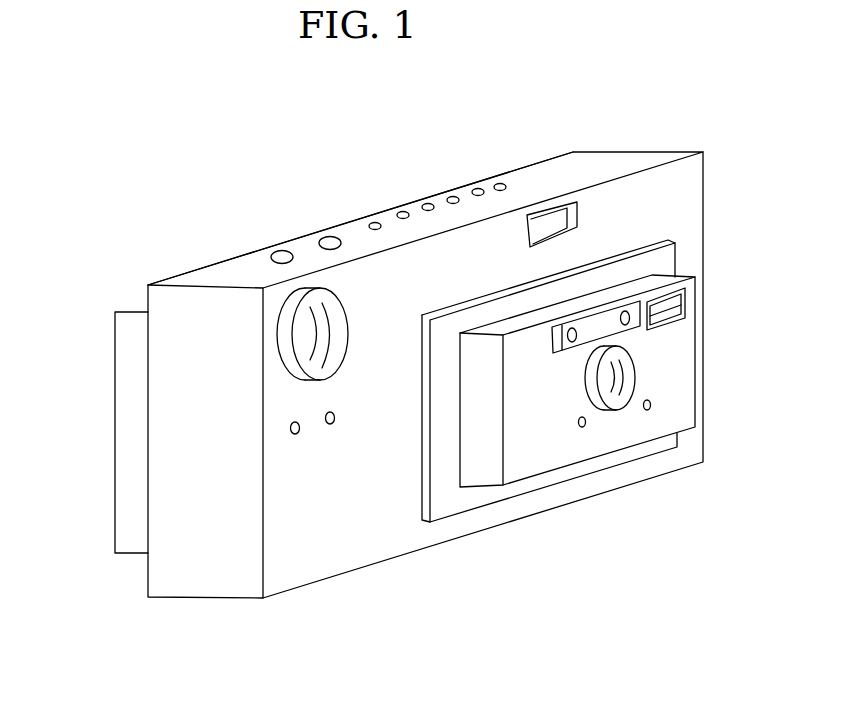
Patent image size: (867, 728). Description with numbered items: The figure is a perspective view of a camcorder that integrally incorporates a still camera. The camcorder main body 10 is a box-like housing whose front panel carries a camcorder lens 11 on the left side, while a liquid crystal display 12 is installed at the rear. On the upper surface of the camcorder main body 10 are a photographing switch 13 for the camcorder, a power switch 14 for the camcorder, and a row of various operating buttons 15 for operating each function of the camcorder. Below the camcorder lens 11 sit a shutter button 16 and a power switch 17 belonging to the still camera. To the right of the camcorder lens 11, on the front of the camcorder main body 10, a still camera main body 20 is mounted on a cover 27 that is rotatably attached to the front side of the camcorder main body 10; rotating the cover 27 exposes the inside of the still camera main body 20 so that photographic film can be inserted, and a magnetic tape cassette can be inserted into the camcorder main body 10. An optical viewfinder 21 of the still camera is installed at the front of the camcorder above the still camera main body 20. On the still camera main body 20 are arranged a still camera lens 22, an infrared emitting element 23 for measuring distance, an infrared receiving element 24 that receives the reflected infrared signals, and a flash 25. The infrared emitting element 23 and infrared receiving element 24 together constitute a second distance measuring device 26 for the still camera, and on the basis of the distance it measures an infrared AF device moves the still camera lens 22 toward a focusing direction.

The camcorder main body 10 is at (347, 214).
The camcorder lens 11 is at (347, 318).
The liquid crystal display 12 is at (123, 413).
The photographing switch 13 is at (280, 251).
The power switch 14 is at (325, 236).
The operating buttons 15 is at (500, 183).
The shutter button 16 is at (295, 434).
The power switch 17 is at (331, 424).
The still camera main body 20 is at (552, 470).
The optical viewfinder 21 is at (572, 216).
The still camera lens 22 is at (620, 398).
The infrared emitting element 23 is at (572, 342).
The infrared receiving element 24 is at (625, 325).
The flash 25 is at (675, 312).
The second distance measuring device 26 is at (598, 322).
The cover 27 is at (450, 498).